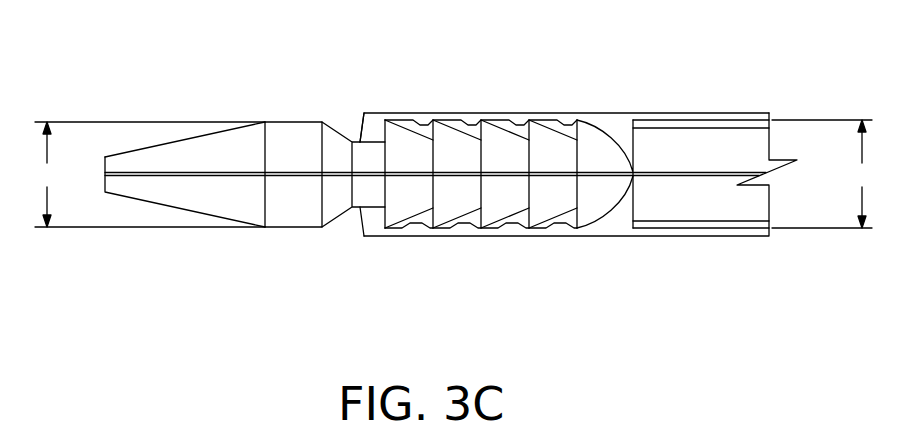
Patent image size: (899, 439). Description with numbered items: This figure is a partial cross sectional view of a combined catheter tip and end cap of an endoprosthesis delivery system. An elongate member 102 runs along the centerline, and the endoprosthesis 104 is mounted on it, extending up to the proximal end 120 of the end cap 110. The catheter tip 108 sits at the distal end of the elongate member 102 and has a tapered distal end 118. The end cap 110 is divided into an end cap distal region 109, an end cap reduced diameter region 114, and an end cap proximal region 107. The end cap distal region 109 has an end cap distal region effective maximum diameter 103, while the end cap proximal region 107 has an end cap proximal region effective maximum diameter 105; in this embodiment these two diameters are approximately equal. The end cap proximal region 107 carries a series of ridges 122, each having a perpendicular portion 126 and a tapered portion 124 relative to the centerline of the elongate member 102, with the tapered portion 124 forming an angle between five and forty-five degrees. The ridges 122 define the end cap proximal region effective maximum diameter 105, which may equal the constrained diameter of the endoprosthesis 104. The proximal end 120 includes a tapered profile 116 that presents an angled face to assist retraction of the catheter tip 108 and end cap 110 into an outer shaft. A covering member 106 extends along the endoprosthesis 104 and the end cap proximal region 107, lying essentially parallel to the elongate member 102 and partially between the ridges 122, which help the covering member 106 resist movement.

The elongate member 102 is at (687, 172).
The end cap distal region effective maximum diameter 103 is at (146, 174).
The endoprosthesis 104 is at (745, 238).
The end cap proximal region effective maximum diameter 105 is at (826, 174).
The covering member 106 is at (738, 117).
The end cap proximal region 107 is at (575, 186).
The catheter tip 108 is at (173, 142).
The end cap distal region 109 is at (270, 192).
The end cap 110 is at (288, 121).
The end cap reduced diameter region 114 is at (345, 138).
The profile 116 is at (627, 152).
The distal end 118 is at (173, 207).
The proximal end 120 is at (603, 231).
The ridges 122 is at (424, 122).
The tapered portion 124 is at (458, 133).
The perpendicular portion 126 is at (378, 118).